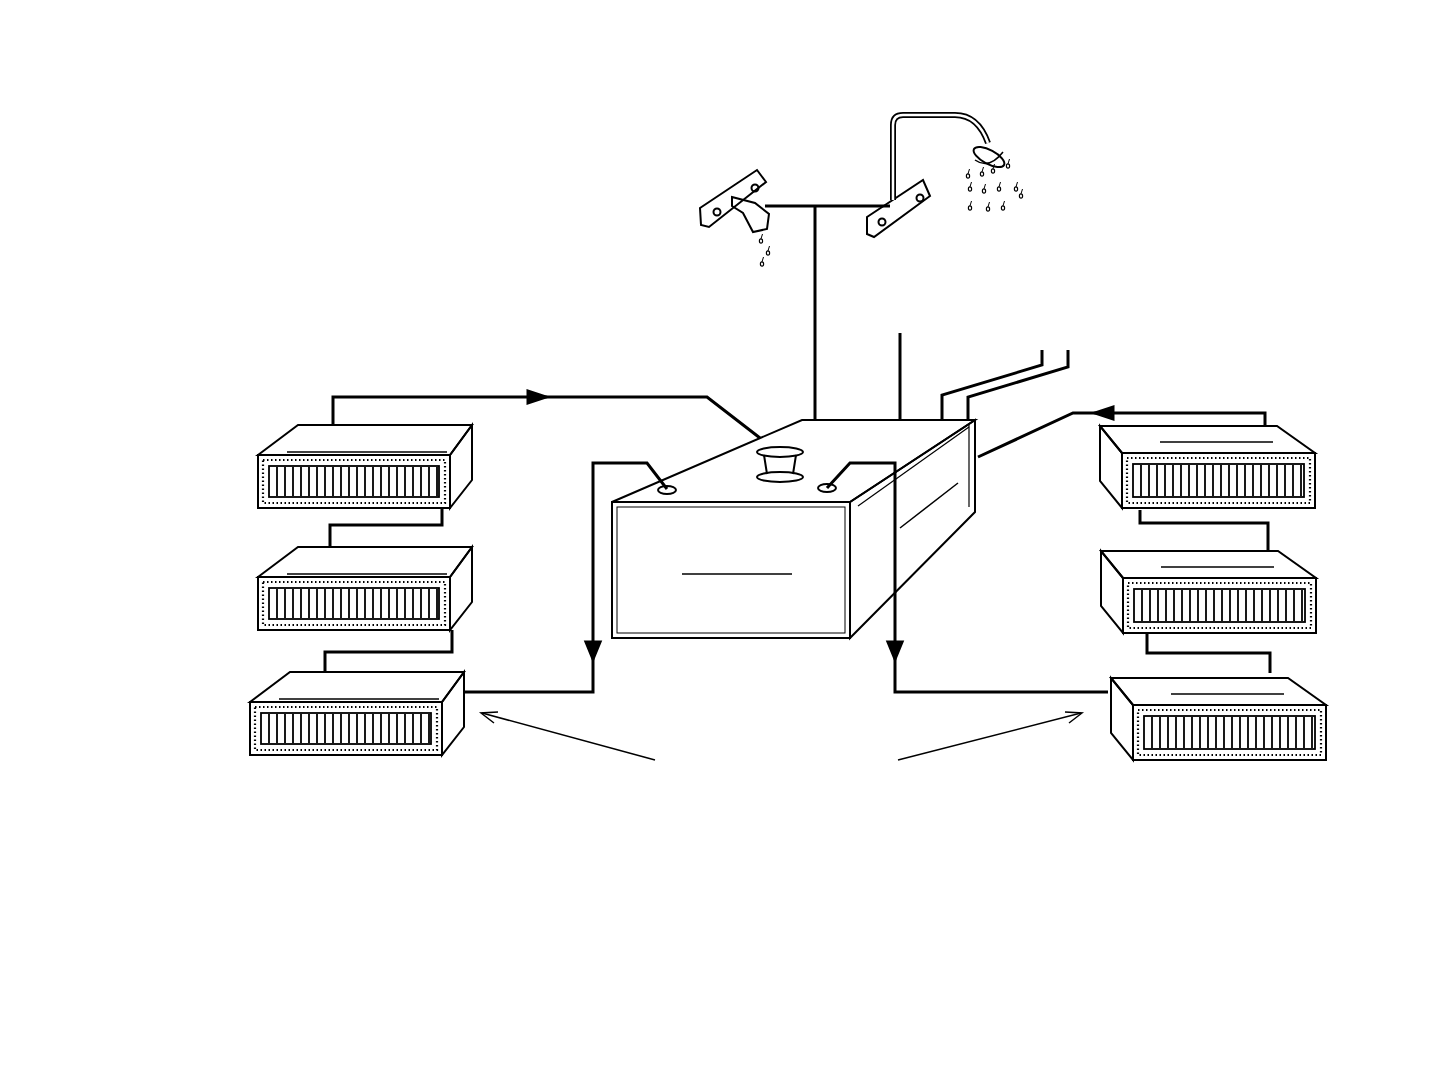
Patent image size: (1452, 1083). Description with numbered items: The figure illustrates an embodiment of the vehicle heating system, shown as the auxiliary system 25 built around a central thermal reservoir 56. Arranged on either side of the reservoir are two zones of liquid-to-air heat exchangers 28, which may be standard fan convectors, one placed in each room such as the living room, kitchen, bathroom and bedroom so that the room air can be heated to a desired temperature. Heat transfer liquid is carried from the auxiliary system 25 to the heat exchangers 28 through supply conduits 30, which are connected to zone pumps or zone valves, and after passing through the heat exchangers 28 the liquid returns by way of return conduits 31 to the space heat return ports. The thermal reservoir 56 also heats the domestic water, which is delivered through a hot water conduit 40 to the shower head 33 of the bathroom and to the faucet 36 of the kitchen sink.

The auxiliary system 25 is at (670, 337).
The liquid-to-air heat exchanger 28 is at (465, 478).
The supply conduit 30 is at (894, 672).
The return conduit 31 is at (624, 398).
The shower head 33 is at (978, 126).
The faucet 36 is at (719, 193).
The hot water conduit 40 is at (815, 346).
The thermal reservoir 56 is at (752, 620).